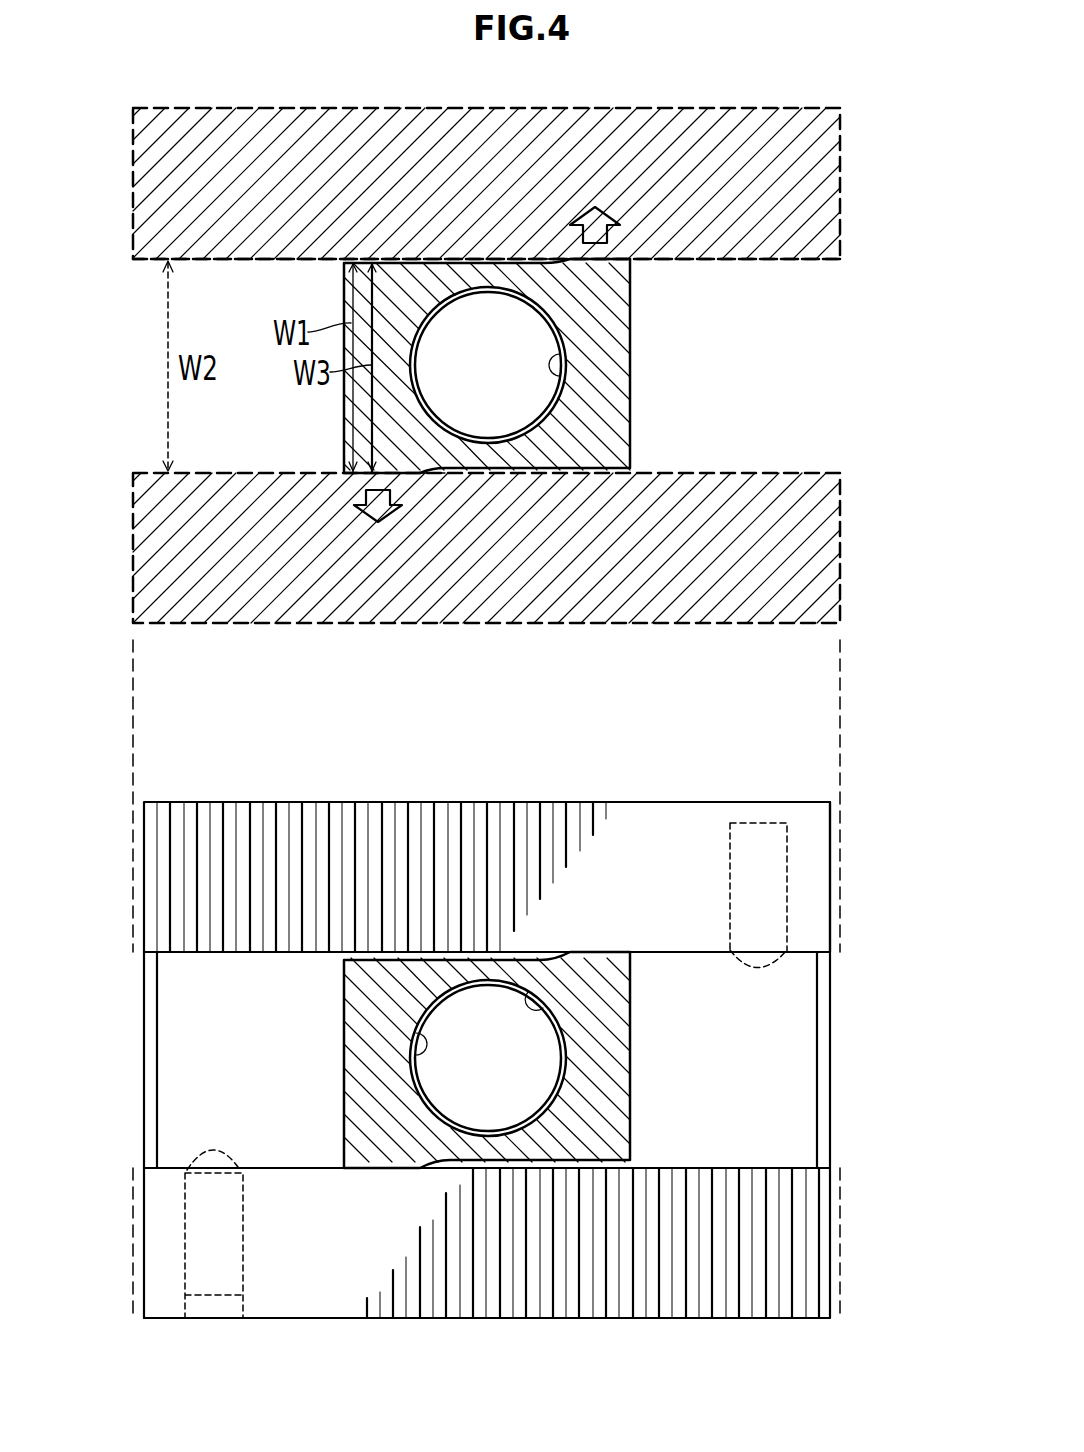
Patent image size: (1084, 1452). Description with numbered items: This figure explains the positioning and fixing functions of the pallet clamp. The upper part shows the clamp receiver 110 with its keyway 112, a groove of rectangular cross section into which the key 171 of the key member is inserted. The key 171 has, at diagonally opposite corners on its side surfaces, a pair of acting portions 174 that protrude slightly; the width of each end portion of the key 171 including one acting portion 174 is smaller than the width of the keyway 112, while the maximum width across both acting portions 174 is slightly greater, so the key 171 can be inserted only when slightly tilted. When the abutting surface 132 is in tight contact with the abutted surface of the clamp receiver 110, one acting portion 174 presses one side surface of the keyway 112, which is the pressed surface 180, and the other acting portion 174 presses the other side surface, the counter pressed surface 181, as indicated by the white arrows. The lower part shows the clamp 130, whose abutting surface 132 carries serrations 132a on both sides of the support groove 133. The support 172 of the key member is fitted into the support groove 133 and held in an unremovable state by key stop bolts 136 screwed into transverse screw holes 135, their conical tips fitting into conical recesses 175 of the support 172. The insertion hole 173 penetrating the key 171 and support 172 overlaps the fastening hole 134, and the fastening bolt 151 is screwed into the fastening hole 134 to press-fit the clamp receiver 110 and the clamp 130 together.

The clamp receiver 110 is at (338, 104).
The keyway 112 is at (808, 260).
The clamp 130 is at (338, 798).
The abutting surface 132 is at (217, 818).
The serrations 132a is at (492, 818).
The support groove 133 is at (822, 1060).
The fastening hole 134 is at (412, 1040).
The transverse screw hole 135 is at (733, 813).
The key stop bolt 136 is at (773, 895).
The fastening bolt 151 is at (514, 383).
The key 171 is at (622, 413).
The support 172 is at (172, 1066).
The insertion hole 173 is at (568, 378).
The acting portion 174 is at (618, 262).
The conical recess 175 is at (742, 953).
The pressed surface 180 is at (387, 471).
The counter pressed surface 181 is at (573, 262).